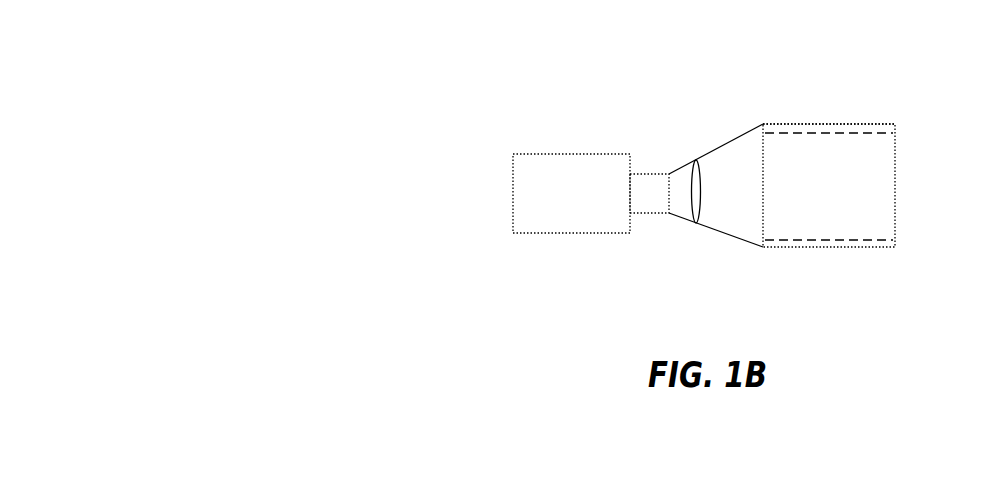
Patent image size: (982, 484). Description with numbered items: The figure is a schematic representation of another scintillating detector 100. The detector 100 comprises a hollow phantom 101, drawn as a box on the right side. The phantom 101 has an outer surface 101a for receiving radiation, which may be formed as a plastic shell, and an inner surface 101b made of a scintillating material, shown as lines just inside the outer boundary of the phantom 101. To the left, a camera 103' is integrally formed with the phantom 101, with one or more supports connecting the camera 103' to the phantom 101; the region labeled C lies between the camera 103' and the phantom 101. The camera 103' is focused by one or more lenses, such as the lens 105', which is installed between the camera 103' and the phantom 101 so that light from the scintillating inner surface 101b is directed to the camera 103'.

The scintillating detector 100 is at (722, 6).
The camera 103' is at (533, 192).
The coupling region C is at (649, 179).
The lens 105' is at (682, 152).
The hollow phantom 101 is at (888, 150).
The outer surface 101a is at (809, 123).
The inner surface 101b is at (882, 132).